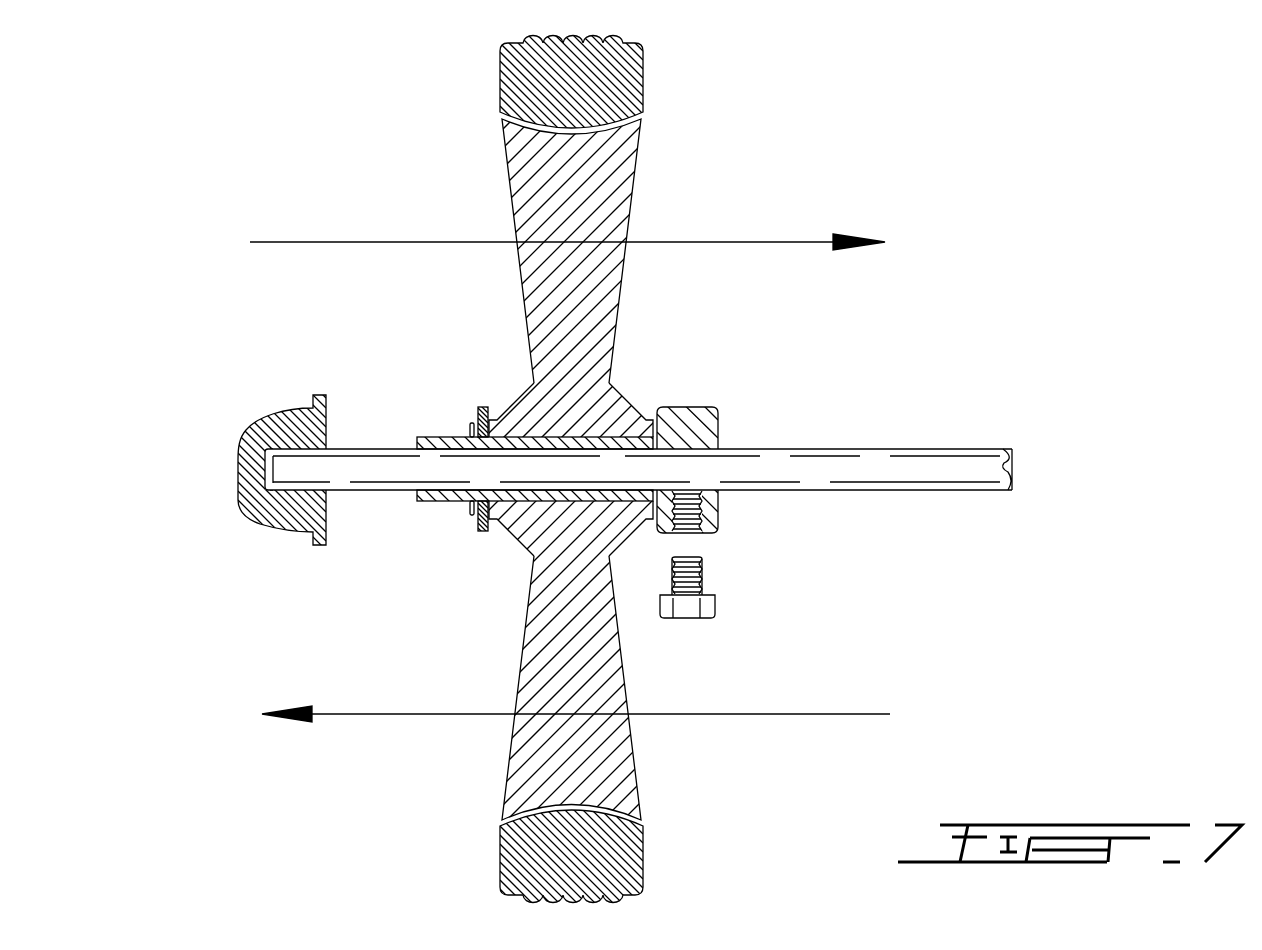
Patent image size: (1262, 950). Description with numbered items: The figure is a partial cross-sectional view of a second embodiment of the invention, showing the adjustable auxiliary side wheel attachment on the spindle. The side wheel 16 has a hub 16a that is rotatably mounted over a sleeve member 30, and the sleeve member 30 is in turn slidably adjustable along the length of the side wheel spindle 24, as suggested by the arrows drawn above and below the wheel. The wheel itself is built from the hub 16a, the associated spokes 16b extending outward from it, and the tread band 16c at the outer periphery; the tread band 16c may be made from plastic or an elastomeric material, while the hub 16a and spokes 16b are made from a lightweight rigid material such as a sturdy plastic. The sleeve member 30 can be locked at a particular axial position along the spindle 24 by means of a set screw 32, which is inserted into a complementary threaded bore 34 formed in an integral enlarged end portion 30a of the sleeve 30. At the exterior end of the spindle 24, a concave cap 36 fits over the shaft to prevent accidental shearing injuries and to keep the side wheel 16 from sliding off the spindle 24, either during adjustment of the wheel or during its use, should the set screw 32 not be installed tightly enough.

The side wheel 16 is at (628, 475).
The hub 16a is at (598, 408).
The spokes 16b is at (590, 222).
The tread band 16c is at (620, 87).
The side wheel spindle 24 is at (390, 483).
The sleeve member 30 is at (443, 437).
The enlarged end portion 30a is at (739, 463).
The set screw 32 is at (689, 612).
The threaded bore 34 is at (696, 515).
The concave cap 36 is at (257, 440).